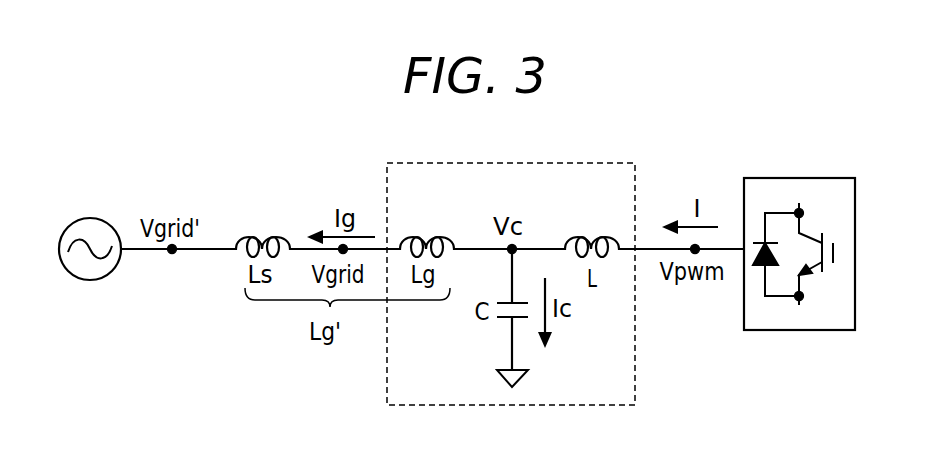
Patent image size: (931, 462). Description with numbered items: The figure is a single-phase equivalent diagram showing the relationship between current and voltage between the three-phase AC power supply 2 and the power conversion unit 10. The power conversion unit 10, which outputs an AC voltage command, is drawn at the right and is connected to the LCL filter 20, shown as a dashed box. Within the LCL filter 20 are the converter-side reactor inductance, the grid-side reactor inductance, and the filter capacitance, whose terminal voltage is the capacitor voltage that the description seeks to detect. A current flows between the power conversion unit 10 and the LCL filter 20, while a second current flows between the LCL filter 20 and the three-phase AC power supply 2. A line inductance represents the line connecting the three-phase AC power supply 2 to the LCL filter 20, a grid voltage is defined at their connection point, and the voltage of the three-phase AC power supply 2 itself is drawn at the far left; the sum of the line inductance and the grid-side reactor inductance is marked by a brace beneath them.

The three-phase AC power supply 2 is at (91, 218).
The power conversion unit 10 is at (802, 178).
The LCL filter 20 is at (514, 163).